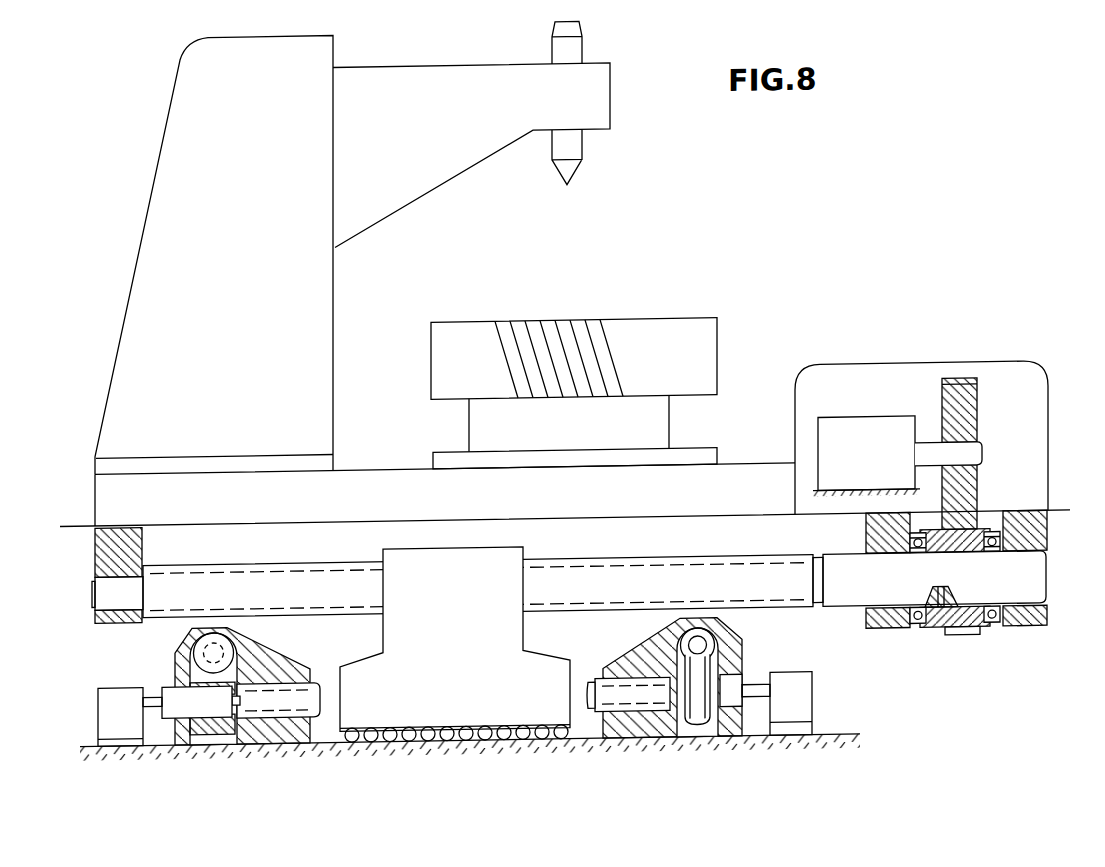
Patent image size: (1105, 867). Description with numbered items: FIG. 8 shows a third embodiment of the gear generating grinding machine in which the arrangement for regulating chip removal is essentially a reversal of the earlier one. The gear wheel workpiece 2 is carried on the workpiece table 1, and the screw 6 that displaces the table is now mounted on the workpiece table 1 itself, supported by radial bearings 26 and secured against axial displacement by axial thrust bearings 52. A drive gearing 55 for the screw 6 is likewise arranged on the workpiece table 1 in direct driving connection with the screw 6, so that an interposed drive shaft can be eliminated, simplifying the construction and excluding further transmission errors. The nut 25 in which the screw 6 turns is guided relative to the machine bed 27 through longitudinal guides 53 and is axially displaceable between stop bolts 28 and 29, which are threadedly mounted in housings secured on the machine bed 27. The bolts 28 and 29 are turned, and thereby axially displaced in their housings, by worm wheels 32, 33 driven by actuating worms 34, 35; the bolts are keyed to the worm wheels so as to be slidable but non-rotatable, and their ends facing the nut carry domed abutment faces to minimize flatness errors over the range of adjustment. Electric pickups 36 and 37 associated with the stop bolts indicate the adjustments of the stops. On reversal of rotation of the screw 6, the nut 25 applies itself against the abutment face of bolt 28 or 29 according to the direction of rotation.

The workpiece table 1 is at (748, 490).
The gear wheel workpiece 2 is at (677, 343).
The screw 6 is at (567, 584).
The nut 25 is at (405, 577).
The radial bearings 26 is at (124, 542).
The machine bed 27 is at (830, 759).
The stop bolt 28 is at (280, 700).
The stop bolt 29 is at (622, 700).
The worm wheel 32 is at (190, 683).
The worm wheel 33 is at (703, 692).
The actuating worm 34 is at (200, 658).
The actuating worm 35 is at (700, 652).
The electric pickup 36 is at (118, 727).
The electric pickup 37 is at (800, 721).
The axial thrust bearings 52 is at (1000, 526).
The longitudinal guides 53 is at (390, 736).
The drive gearing 55 is at (1010, 392).